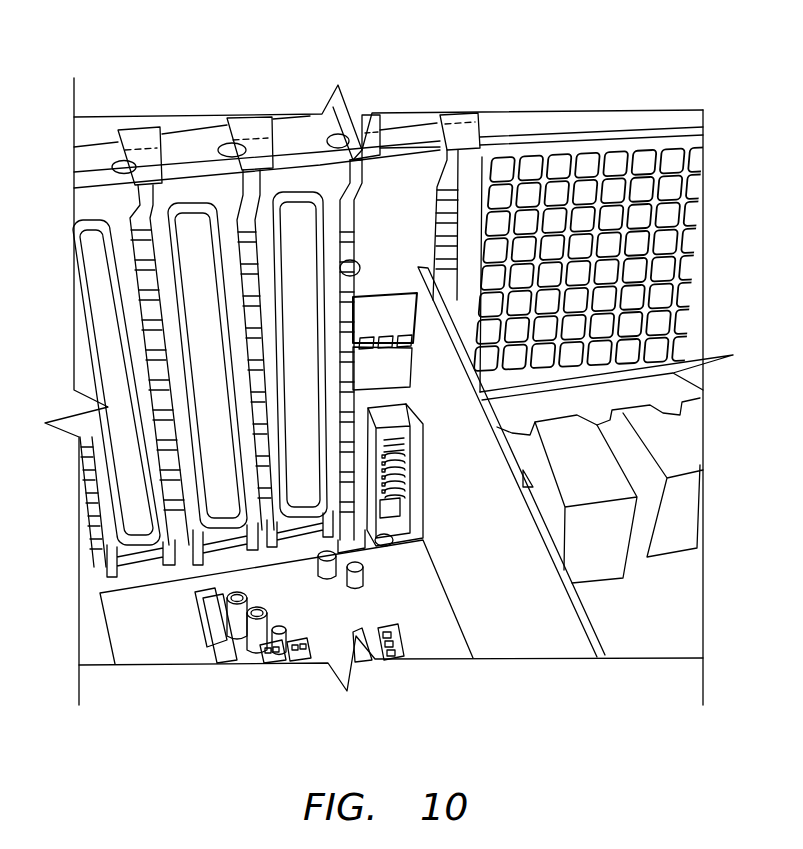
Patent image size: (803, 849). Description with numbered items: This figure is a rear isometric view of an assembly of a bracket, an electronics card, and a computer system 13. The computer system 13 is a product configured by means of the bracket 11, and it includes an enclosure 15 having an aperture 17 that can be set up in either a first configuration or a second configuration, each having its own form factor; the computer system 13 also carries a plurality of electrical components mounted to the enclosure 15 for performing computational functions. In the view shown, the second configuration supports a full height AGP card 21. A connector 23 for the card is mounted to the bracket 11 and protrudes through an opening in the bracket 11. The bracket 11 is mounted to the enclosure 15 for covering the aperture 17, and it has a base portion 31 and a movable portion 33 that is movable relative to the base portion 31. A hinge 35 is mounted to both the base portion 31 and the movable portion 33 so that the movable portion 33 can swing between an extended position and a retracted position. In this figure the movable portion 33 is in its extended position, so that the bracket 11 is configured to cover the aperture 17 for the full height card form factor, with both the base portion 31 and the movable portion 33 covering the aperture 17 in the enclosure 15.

The computer system 13 is at (148, 72).
The bracket 11 is at (338, 180).
The enclosure 15 is at (477, 173).
The movable portion 33 is at (385, 227).
The aperture 17 is at (355, 262).
The hinge 35 is at (365, 323).
The base portion 31 is at (357, 439).
The connector 23 is at (377, 483).
The full height AGP card 21 is at (555, 613).